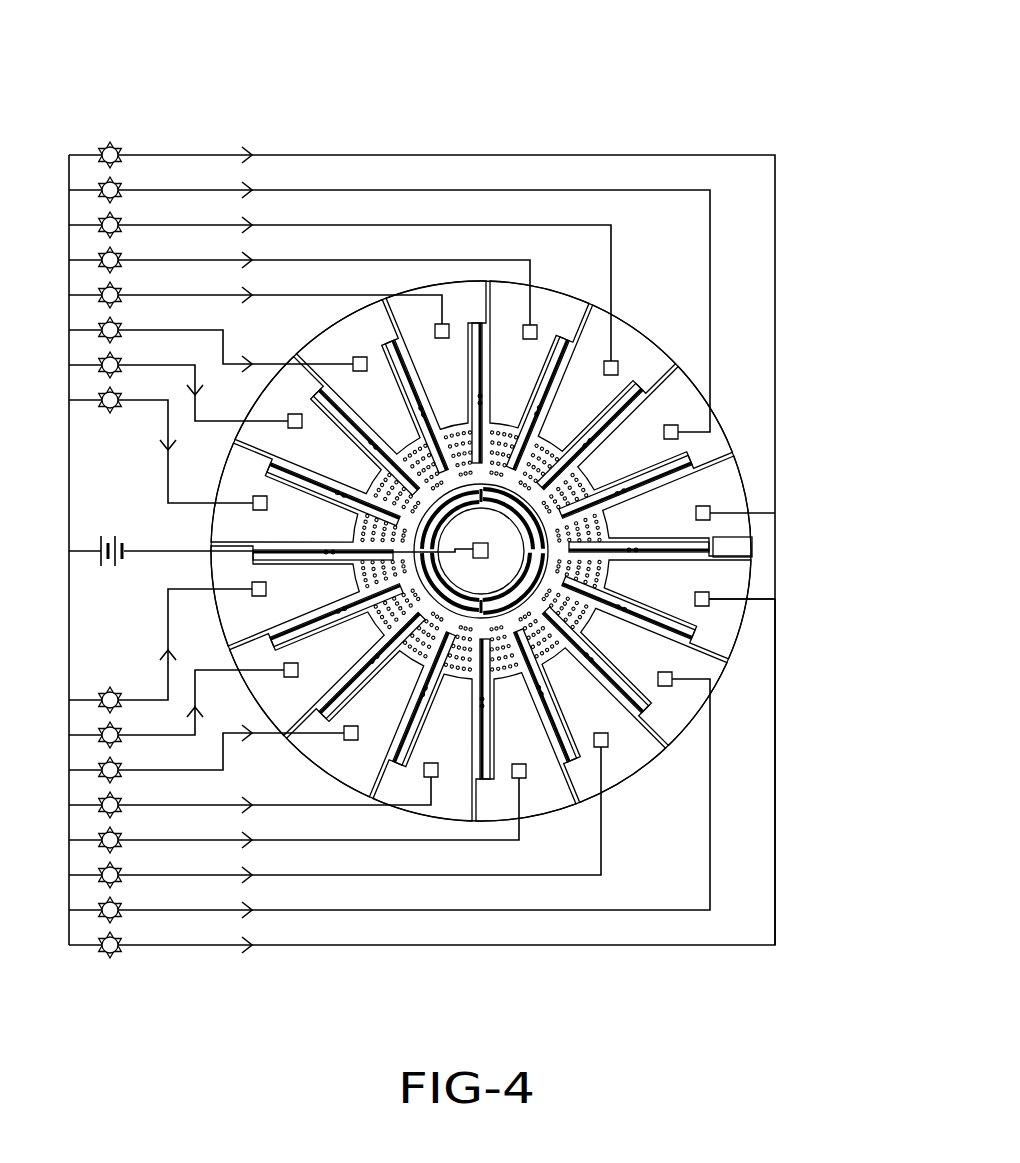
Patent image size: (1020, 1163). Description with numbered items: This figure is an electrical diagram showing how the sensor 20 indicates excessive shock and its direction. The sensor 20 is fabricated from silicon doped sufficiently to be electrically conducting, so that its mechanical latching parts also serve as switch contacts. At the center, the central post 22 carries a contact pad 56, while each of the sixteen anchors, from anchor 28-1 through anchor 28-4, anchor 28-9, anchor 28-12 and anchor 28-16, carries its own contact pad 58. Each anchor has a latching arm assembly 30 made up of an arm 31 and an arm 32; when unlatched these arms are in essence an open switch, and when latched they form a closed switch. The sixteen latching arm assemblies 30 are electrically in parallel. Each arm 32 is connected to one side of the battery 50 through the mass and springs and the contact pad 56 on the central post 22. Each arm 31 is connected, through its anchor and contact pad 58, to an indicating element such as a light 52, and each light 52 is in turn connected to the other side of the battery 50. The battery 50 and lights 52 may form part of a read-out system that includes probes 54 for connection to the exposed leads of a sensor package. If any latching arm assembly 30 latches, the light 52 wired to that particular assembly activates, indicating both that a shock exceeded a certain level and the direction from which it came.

The sensor 20 is at (805, 132).
The central post 22 is at (478, 525).
The anchor 28-1 is at (543, 305).
The anchor 28-4 is at (725, 482).
The anchor 28-9 is at (455, 800).
The anchor 28-12 is at (235, 615).
The anchor 28-16 is at (418, 312).
The latching arm assembly 30 is at (690, 557).
The arm 31 is at (693, 550).
The arm 32 is at (709, 600).
The battery 50 is at (131, 523).
The light 52 is at (122, 130).
The probe 54 is at (255, 130).
The contact pad 56 is at (490, 549).
The contact pad 58 is at (618, 368).